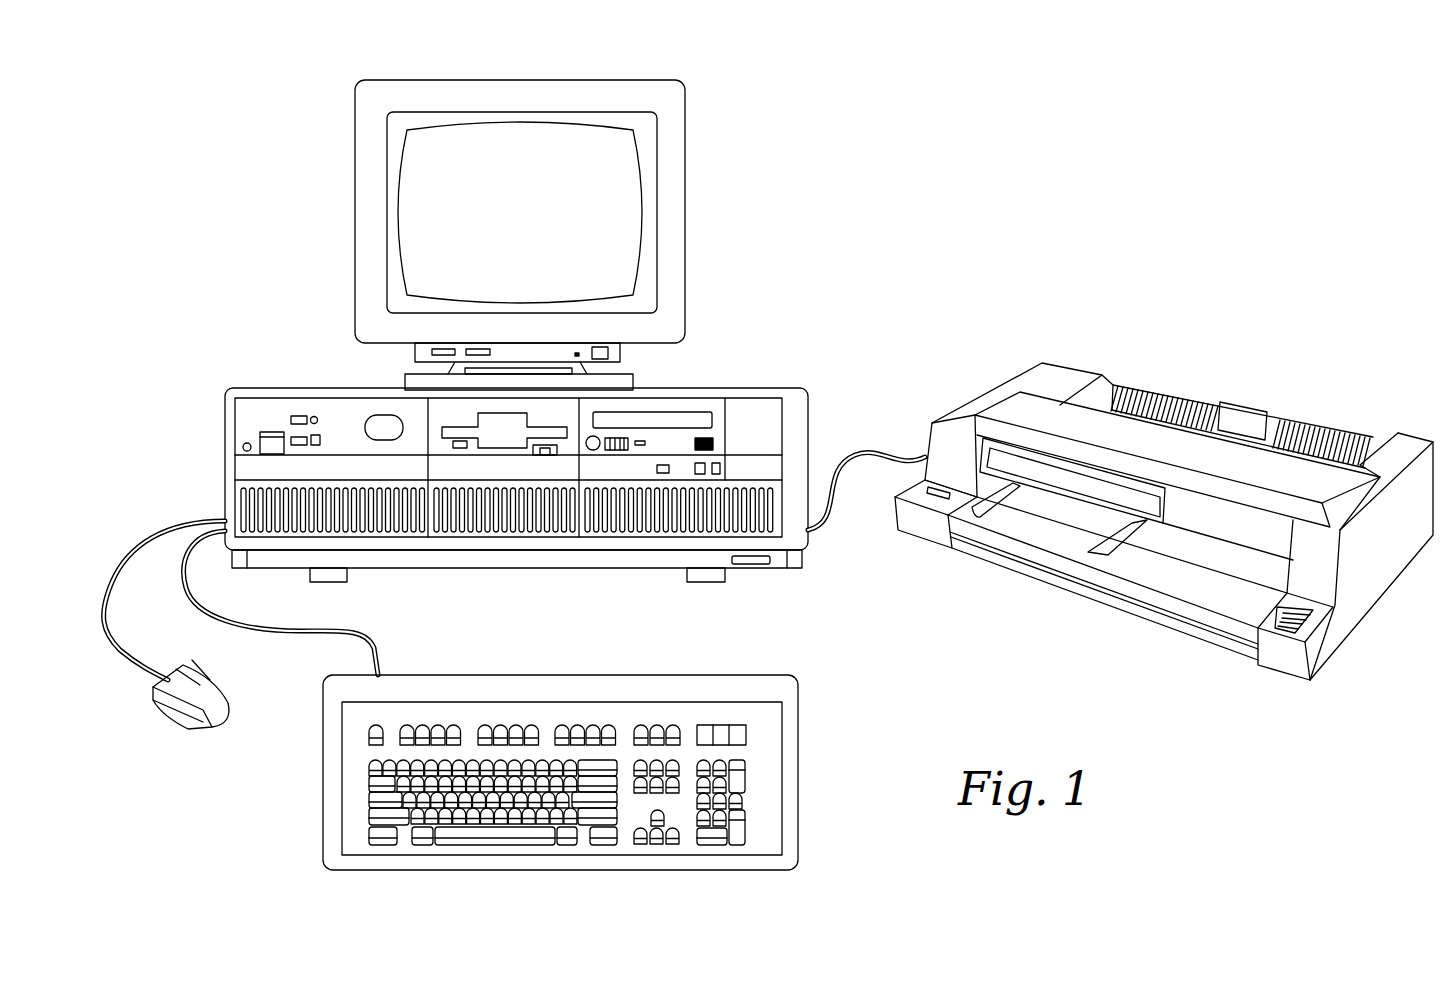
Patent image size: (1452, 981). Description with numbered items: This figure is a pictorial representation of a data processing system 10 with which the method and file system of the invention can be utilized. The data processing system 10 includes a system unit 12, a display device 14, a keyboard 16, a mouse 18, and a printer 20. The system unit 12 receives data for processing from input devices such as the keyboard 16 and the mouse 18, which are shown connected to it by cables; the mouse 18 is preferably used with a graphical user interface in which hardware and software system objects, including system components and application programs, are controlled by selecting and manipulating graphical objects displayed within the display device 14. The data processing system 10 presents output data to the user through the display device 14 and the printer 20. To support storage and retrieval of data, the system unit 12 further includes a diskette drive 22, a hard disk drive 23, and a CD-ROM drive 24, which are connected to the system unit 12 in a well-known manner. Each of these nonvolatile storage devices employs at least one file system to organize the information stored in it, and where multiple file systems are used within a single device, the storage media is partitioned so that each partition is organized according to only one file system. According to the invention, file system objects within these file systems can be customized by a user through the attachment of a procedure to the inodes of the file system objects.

The data processing system 10 is at (887, 130).
The system unit 12 is at (782, 378).
The display device 14 is at (708, 232).
The keyboard 16 is at (649, 650).
The mouse 18 is at (178, 707).
The printer 20 is at (955, 375).
The diskette drive 22 is at (497, 447).
The hard disk drive 23 is at (658, 470).
The CD-ROM drive 24 is at (674, 418).